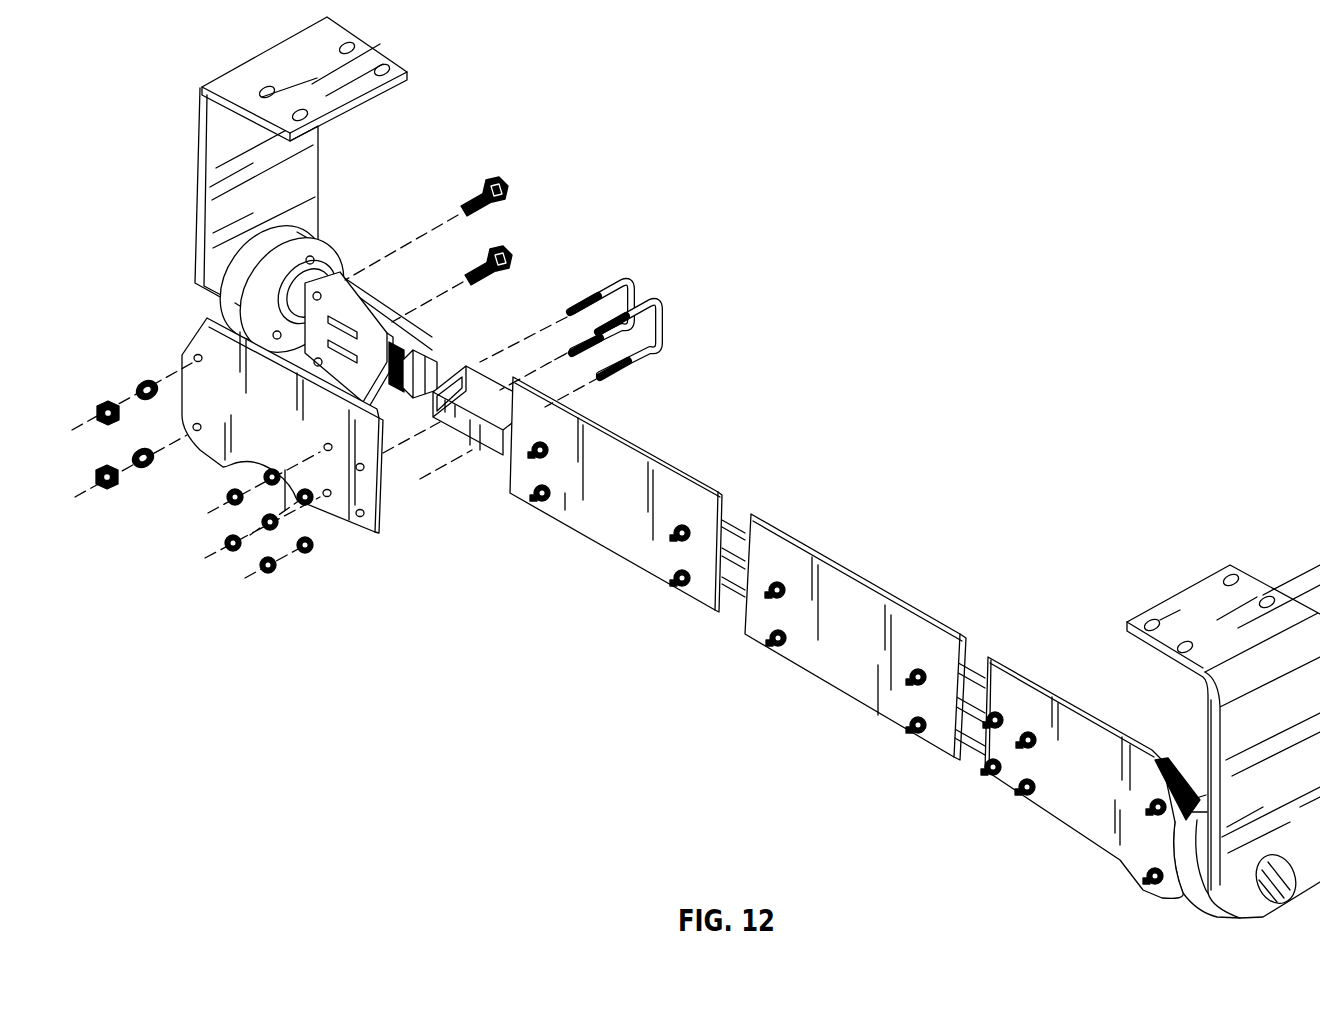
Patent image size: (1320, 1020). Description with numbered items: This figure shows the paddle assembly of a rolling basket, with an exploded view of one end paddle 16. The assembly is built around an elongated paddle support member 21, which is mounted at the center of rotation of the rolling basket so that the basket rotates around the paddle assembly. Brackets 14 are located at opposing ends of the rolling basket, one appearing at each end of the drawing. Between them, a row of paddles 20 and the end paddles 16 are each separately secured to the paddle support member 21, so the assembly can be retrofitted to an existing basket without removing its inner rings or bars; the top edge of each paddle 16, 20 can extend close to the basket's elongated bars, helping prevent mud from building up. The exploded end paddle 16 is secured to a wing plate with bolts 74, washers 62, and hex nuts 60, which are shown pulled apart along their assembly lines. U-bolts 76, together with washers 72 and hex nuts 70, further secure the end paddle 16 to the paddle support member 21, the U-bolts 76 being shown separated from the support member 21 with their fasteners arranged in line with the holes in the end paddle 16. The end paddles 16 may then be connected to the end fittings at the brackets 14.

The bracket 14 is at (362, 48).
The end paddle 16 is at (378, 484).
The paddle 20 is at (648, 447).
The elongated paddle support member 21 is at (493, 457).
The hex nut 60 is at (112, 402).
The washer 62 is at (150, 380).
The hex nut 70 is at (262, 522).
The washer 72 is at (274, 472).
The bolt 74 is at (498, 178).
The U-bolt 76 is at (613, 284).